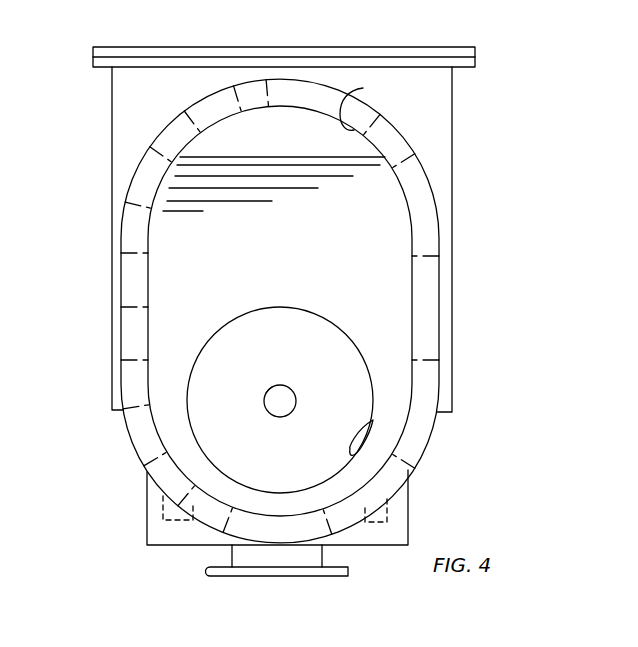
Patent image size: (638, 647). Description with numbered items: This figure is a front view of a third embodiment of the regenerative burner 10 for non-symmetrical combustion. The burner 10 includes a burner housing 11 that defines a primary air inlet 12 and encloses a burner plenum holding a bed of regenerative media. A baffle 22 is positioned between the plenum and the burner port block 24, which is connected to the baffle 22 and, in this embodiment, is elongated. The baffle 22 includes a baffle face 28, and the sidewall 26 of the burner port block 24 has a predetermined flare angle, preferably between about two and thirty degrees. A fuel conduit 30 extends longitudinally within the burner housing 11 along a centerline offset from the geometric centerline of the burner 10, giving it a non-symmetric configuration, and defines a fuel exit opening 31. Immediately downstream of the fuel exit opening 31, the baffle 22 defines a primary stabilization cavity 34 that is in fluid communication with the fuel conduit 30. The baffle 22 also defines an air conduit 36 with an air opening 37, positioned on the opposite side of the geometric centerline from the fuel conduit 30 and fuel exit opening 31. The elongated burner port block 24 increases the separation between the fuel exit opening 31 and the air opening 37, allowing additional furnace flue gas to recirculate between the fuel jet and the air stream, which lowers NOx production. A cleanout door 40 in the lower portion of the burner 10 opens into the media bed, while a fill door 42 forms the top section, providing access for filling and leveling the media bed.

The regenerative burner 10 is at (68, 127).
The burner housing 11 is at (452, 115).
The primary air inlet 12 is at (322, 579).
The baffle 22 is at (414, 293).
The burner port block 24 is at (425, 165).
The sidewall 26 is at (431, 227).
The baffle face 28 is at (288, 273).
The fuel conduit 30 is at (296, 404).
The fuel exit opening 31 is at (268, 391).
The primary stabilization cavity 34 is at (373, 420).
The air conduit 36 is at (366, 104).
The air opening 37 is at (273, 144).
The cleanout door 40 is at (163, 496).
The fill door 42 is at (397, 50).